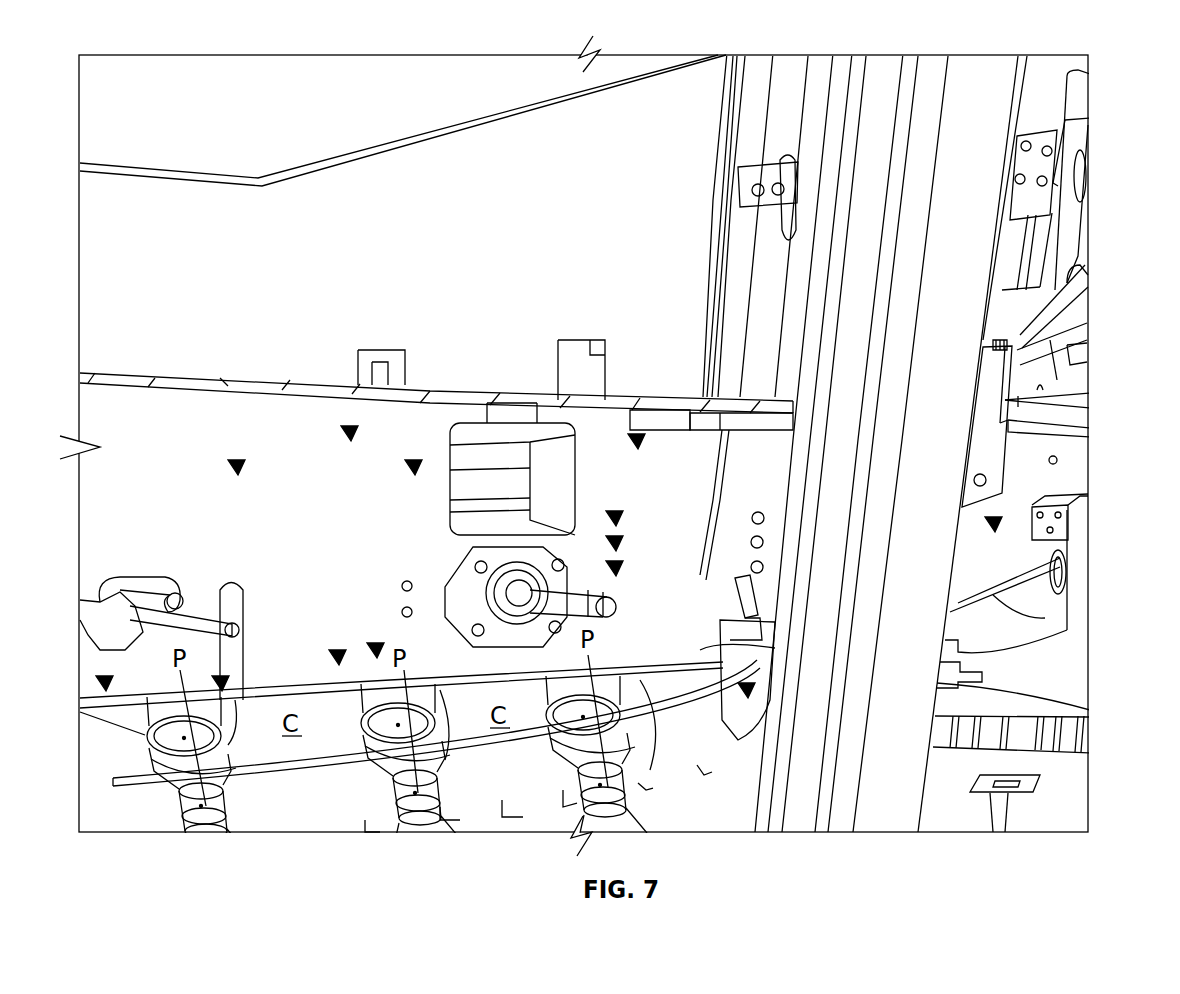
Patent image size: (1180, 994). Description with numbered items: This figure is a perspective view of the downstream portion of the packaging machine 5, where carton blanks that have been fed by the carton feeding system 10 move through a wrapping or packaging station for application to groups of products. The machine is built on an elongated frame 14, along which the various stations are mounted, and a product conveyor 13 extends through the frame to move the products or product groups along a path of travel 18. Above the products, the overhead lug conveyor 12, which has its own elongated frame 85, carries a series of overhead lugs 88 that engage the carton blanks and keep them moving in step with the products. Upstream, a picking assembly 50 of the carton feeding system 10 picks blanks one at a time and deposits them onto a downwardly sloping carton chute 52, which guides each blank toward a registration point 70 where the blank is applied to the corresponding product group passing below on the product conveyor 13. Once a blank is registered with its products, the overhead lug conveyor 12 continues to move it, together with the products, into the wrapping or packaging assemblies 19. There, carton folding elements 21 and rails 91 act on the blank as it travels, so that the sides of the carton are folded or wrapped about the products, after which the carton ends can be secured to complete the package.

The packaging machine 5 is at (479, 117).
The carton feeding system 10 is at (985, 85).
The overhead lug conveyor 12 is at (425, 390).
The product conveyor 13 is at (947, 777).
The elongated frame 14 is at (960, 360).
The path of travel 18 is at (235, 686).
The wrapping or packaging assemblies 19 is at (645, 484).
The carton folding elements 21 is at (368, 664).
The picking assembly 50 is at (1070, 458).
The carton chute 52 is at (958, 608).
The registration point 70 is at (746, 686).
The elongated frame of the overhead lug conveyor 85 is at (340, 534).
The overhead lugs 88 is at (540, 672).
The rails 91 is at (437, 700).